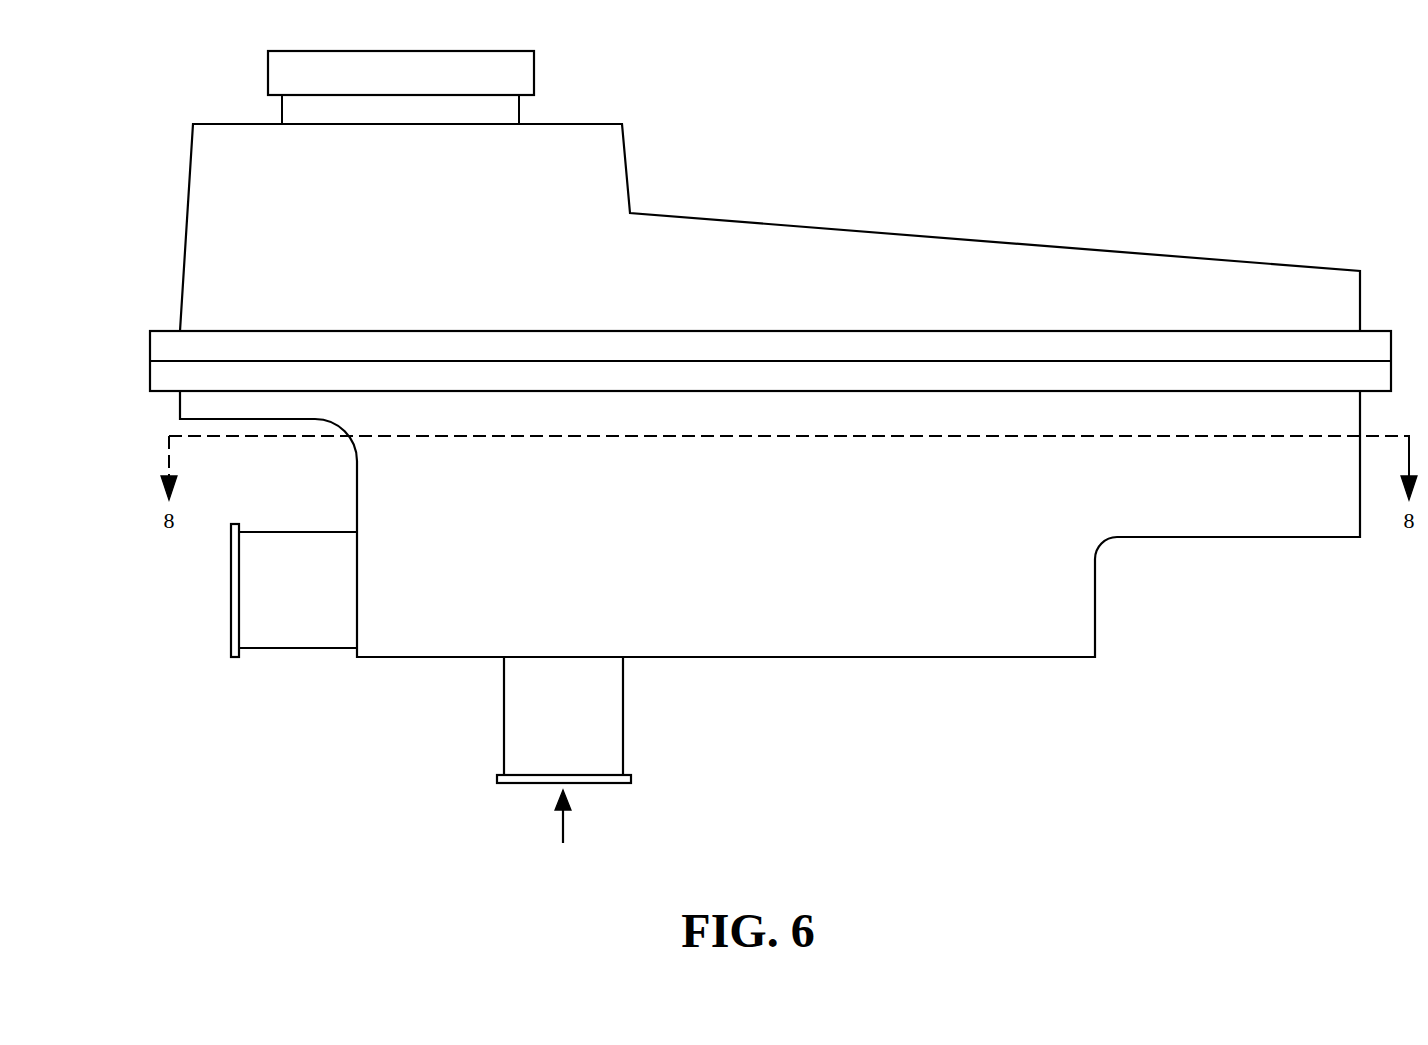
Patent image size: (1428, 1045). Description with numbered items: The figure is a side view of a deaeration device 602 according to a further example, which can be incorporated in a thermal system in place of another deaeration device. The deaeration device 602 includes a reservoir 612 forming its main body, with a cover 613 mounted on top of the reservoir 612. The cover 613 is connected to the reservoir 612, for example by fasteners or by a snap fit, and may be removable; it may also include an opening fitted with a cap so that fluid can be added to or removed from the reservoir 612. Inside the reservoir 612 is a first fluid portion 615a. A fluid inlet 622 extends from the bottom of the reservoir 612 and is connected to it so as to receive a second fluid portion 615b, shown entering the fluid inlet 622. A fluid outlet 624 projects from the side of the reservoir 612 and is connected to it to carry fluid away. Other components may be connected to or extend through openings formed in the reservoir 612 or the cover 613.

The deaeration device 602 is at (166, 70).
The cover 613 is at (1205, 254).
The reservoir 612 is at (1240, 540).
The fluid outlet 624 is at (335, 530).
The fluid inlet 622 is at (623, 745).
The first fluid portion 615a is at (979, 632).
The second fluid portion 615b is at (565, 833).